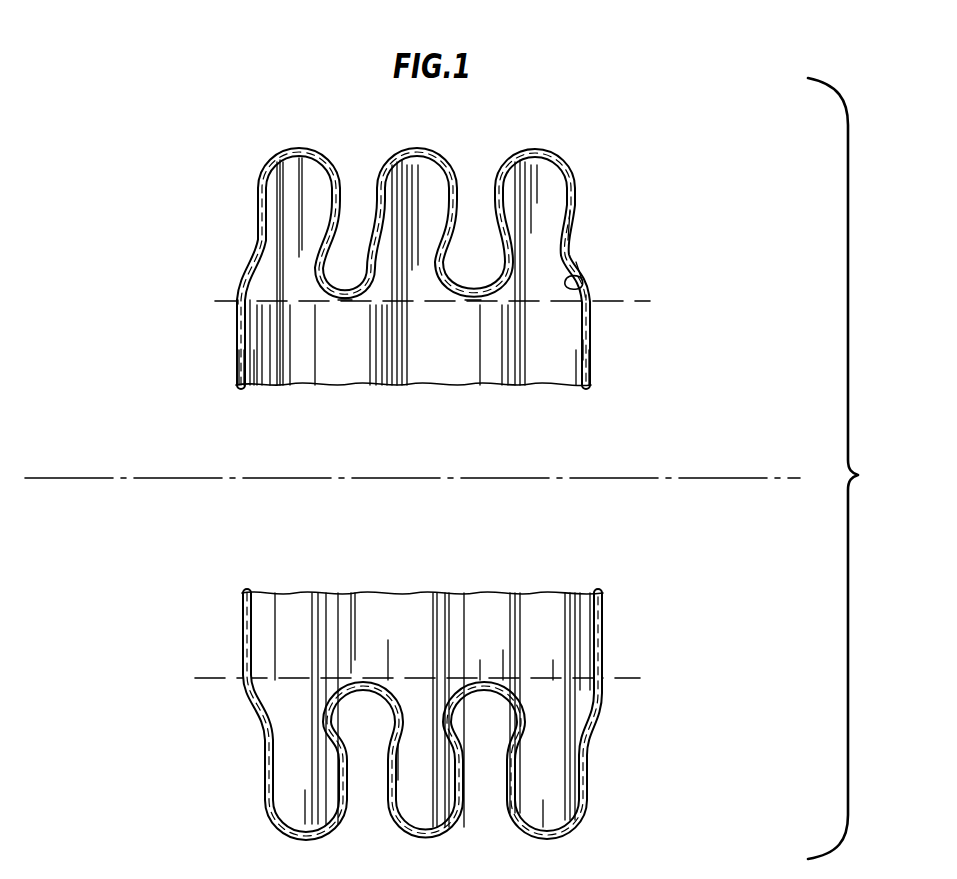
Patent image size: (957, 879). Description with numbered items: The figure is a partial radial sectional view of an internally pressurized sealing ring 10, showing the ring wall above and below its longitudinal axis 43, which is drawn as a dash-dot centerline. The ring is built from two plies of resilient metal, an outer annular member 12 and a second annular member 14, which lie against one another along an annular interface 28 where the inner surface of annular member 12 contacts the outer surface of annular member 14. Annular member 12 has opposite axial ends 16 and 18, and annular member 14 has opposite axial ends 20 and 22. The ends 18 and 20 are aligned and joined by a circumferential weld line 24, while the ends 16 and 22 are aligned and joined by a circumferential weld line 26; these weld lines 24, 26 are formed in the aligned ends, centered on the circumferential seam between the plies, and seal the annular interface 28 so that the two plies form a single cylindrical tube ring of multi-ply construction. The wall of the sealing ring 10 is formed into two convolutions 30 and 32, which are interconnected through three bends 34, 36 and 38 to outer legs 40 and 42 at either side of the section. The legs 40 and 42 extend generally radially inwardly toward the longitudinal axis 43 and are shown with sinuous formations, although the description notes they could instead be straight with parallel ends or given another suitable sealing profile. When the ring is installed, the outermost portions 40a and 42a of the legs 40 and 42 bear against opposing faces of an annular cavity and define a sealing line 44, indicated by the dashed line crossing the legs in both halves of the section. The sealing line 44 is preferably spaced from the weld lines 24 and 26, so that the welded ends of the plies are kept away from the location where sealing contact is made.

The sealing ring 10 is at (676, 227).
The annular member 12 is at (577, 251).
The annular member 14 is at (592, 288).
The axial end 16 is at (577, 355).
The axial end 18 is at (258, 368).
The axial end 20 is at (233, 353).
The axial end 22 is at (590, 352).
The circumferential weld line 24 is at (247, 360).
The circumferential weld line 26 is at (585, 386).
The annular interface 28 is at (371, 285).
The convolution 30 is at (355, 305).
The convolution 32 is at (472, 302).
The bend 34 is at (292, 150).
The bend 36 is at (422, 150).
The bend 38 is at (535, 150).
The outer leg 40 is at (249, 258).
The outermost portion 40a is at (230, 298).
The outer leg 42 is at (586, 273).
The outermost portion 42a is at (641, 291).
The longitudinal axis 43 is at (785, 480).
The sealing line 44 is at (626, 303).